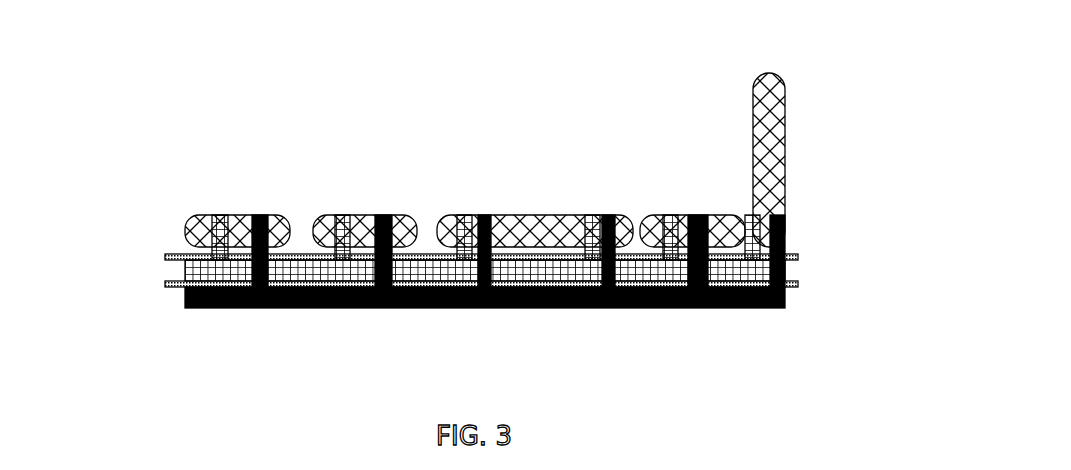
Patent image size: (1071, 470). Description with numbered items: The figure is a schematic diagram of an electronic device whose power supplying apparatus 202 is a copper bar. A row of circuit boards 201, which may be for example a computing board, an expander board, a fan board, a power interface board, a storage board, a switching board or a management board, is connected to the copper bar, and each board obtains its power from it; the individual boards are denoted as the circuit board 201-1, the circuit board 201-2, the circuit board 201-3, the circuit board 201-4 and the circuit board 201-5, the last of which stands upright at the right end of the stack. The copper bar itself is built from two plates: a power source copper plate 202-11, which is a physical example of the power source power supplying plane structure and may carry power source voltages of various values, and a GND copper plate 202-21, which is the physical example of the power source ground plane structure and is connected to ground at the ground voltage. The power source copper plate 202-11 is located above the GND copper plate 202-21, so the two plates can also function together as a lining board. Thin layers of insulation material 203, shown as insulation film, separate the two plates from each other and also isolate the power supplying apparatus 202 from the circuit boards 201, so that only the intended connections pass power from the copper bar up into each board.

The circuit board 201 is at (499, 143).
The circuit board 201-1 is at (234, 209).
The circuit board 201-2 is at (366, 209).
The circuit board 201-3 is at (535, 209).
The circuit board 201-4 is at (688, 209).
The circuit board 201-5 is at (770, 143).
The power supplying apparatus 202 is at (567, 255).
The power source copper plate 202-11 is at (797, 261).
The GND copper plate 202-21 is at (498, 309).
The insulation material 203 is at (166, 257).